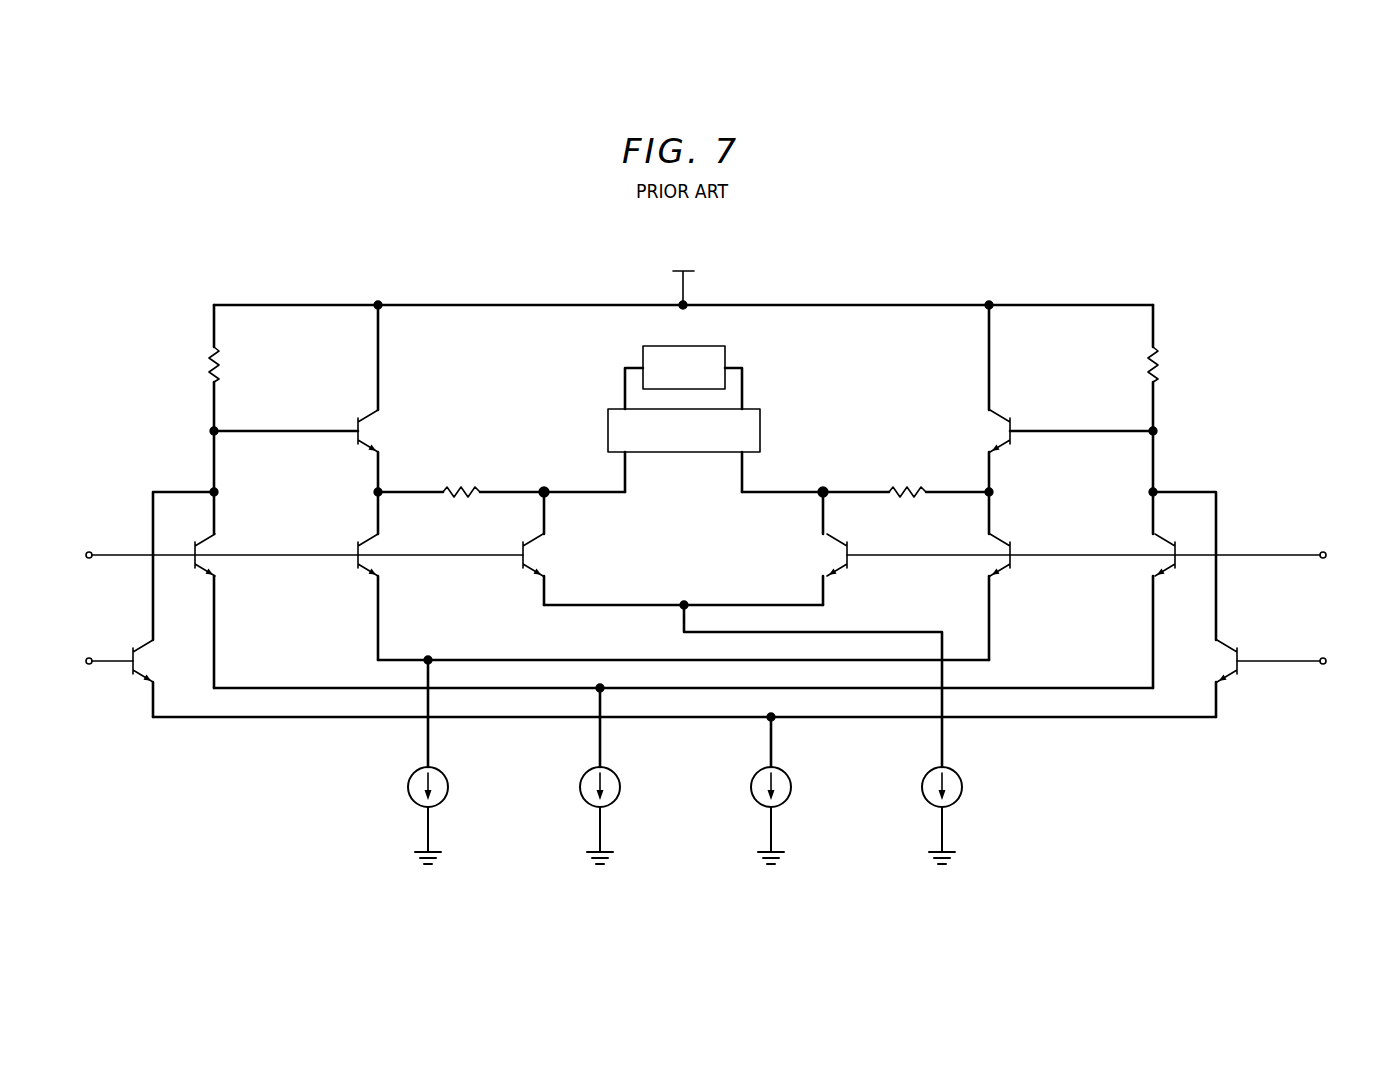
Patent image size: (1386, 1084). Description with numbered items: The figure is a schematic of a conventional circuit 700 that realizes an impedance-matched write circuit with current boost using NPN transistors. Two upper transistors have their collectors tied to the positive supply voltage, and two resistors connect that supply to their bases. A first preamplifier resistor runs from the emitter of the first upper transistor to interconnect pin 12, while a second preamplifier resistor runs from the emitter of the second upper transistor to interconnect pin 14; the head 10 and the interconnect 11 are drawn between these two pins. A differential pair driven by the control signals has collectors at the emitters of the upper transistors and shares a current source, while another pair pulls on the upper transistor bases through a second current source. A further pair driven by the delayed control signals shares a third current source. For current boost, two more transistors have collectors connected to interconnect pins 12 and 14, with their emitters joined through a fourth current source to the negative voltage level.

The conventional circuit 700 is at (1032, 233).
The head 10 is at (727, 353).
The interconnect 11 is at (762, 432).
The interconnect pin 12 is at (544, 487).
The interconnect pin 14 is at (824, 487).